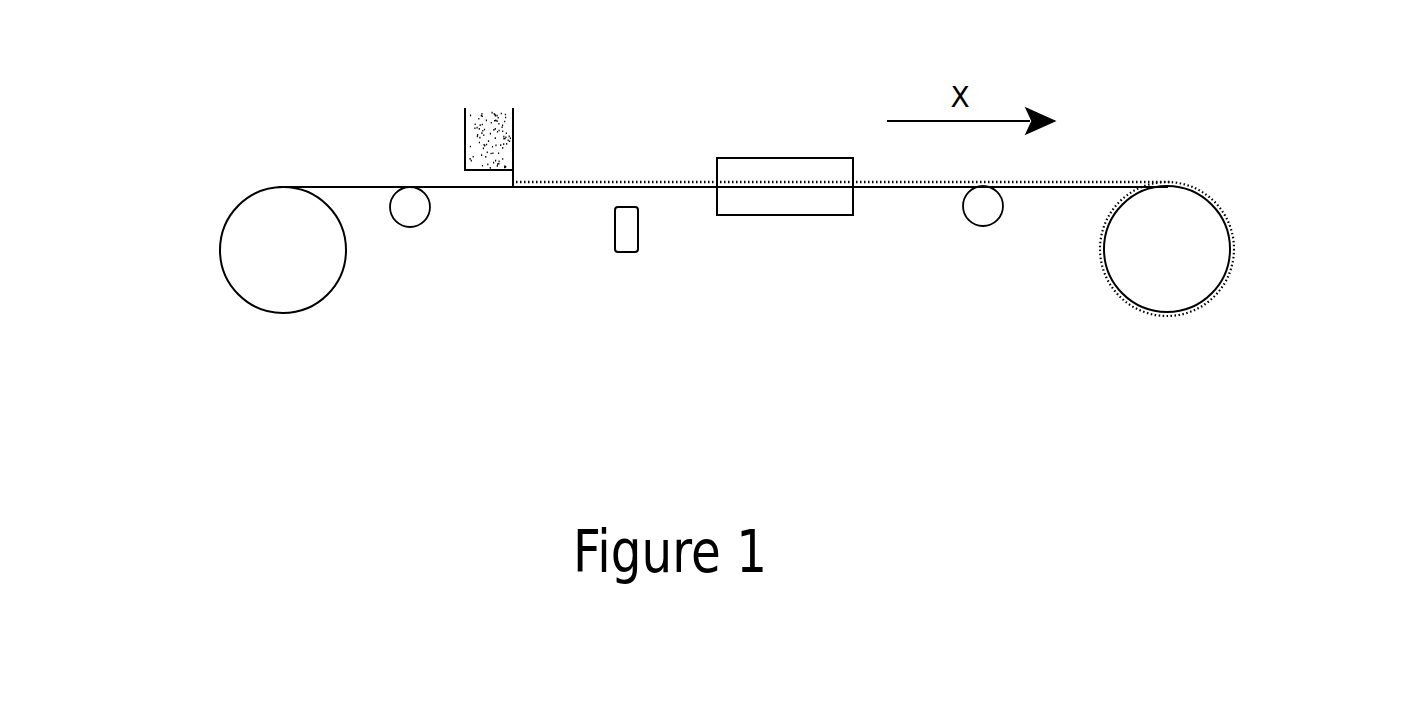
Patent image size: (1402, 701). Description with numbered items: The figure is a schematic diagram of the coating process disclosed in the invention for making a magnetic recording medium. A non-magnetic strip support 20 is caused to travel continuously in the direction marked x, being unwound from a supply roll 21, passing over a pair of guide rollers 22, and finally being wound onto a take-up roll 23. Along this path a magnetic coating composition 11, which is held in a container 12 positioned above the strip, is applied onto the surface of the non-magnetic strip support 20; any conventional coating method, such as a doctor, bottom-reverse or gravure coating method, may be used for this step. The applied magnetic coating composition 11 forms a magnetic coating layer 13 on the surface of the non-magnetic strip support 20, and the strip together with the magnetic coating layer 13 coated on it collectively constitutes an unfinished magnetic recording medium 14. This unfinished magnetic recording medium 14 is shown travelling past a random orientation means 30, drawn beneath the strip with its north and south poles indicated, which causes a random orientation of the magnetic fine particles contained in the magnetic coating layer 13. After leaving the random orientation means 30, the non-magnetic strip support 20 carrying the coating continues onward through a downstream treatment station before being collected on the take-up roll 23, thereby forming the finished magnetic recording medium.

The magnetic coating composition 11 is at (490, 120).
The container 12 is at (464, 138).
The magnetic coating layer 13 is at (573, 182).
The unfinished magnetic recording medium 14 is at (672, 174).
The non-magnetic strip support 20 is at (354, 186).
The supply roll 21 is at (220, 243).
The guide rollers 22 is at (413, 229).
The take-up roll 23 is at (1235, 256).
The random orientation means 30 is at (628, 257).